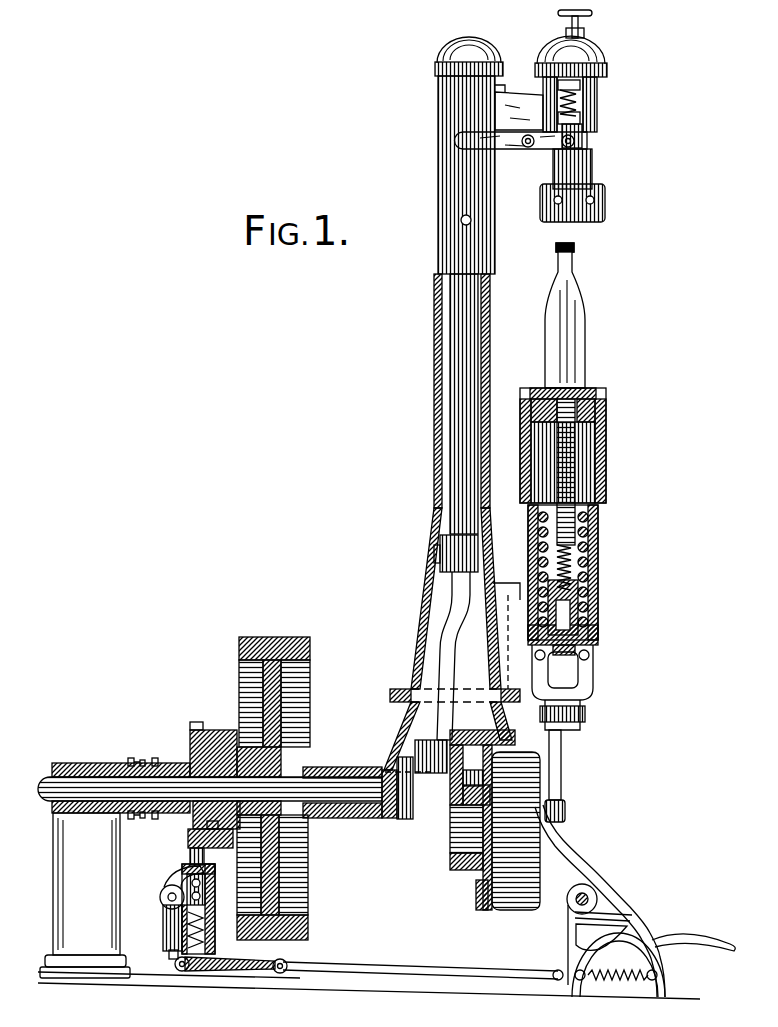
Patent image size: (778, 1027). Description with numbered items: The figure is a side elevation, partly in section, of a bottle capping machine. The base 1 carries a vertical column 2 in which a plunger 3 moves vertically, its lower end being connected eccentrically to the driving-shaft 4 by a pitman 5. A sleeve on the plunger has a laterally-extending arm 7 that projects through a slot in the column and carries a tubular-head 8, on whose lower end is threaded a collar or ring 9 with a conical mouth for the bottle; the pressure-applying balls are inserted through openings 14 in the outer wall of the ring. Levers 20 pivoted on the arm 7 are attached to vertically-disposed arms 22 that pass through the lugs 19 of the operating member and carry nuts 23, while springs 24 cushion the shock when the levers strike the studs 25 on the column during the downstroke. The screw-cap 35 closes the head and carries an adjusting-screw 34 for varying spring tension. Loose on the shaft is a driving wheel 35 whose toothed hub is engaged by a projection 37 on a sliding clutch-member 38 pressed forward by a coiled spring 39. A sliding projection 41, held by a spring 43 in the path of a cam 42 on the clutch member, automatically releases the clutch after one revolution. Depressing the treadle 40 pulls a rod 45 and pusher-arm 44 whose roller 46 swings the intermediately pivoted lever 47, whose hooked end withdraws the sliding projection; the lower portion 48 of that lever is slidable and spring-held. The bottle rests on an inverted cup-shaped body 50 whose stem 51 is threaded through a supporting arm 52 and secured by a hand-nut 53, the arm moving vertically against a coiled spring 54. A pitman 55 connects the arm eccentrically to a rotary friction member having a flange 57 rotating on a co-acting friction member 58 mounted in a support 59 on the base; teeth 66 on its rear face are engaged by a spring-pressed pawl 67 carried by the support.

The base 1 is at (570, 849).
The column 2 is at (434, 457).
The plunger 3 is at (456, 378).
The driving-shaft 4 is at (333, 790).
The pitman 5 is at (452, 618).
The laterally-extending arm 7 is at (518, 128).
The tubular-head 8 is at (592, 170).
The collar or ring 9 is at (605, 207).
The openings 14 is at (595, 200).
The lugs 19 is at (582, 118).
The levers 20 is at (513, 152).
The vertically-disposed arms 22 is at (585, 133).
The nuts 23 is at (582, 84).
The springs 24 is at (578, 100).
The studs 25 is at (460, 219).
The adjusting-screw 34 is at (580, 20).
The screw-cap / driving wheel 35 is at (598, 57).
The projection 37 is at (200, 832).
The sliding clutch-member 38 is at (190, 740).
The coiled spring 39 is at (150, 815).
The treadle 40 is at (697, 943).
The sliding projection 41 is at (190, 856).
The cam 42 is at (190, 723).
The spring 43 is at (209, 920).
The pusher-arm 44 is at (268, 969).
The rod 45 is at (388, 973).
The roller 46 is at (182, 972).
The intermediately pivoted lever 47 is at (163, 917).
The lower portion of lever 48 is at (168, 954).
The inverted cup-shaped body 50 is at (607, 447).
The stem 51 is at (568, 492).
The supporting arm 52 is at (598, 567).
The hand-nut 53 is at (592, 651).
The coiled spring 54 is at (588, 539).
The pitman 55 is at (561, 753).
The flange 57 is at (530, 867).
The co-acting friction member 58 is at (452, 826).
The support 59 is at (450, 862).
The teeth 66 is at (477, 887).
The spring-pressed pawl 67 is at (458, 786).